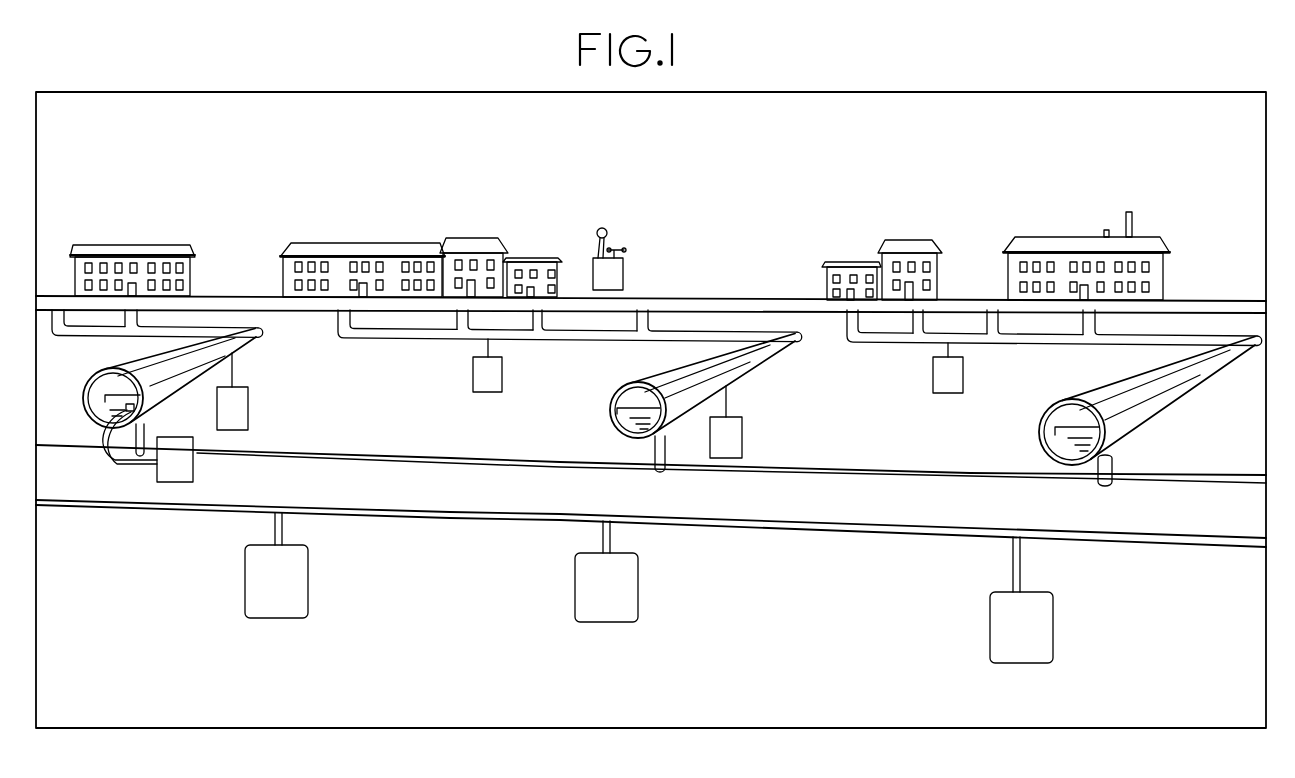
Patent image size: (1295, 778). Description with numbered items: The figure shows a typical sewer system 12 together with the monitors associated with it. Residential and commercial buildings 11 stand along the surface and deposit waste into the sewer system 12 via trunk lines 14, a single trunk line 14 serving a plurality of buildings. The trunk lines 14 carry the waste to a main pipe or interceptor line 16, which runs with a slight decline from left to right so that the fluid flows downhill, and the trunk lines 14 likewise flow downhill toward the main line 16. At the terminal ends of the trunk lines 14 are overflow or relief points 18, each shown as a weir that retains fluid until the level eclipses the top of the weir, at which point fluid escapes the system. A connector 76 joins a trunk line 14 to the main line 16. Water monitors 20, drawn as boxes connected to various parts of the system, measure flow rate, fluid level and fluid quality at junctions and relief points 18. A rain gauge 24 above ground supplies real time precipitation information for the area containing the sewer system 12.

The residential and commercial buildings 11 is at (360, 236).
The sewer system 12 is at (820, 155).
The trunk line 14 is at (148, 362).
The main pipe or interceptor line 16 is at (343, 456).
The relief point 18 is at (1060, 438).
The water monitor 20 is at (190, 421).
The rain gauge 24 is at (626, 272).
The connector 76 is at (640, 450).